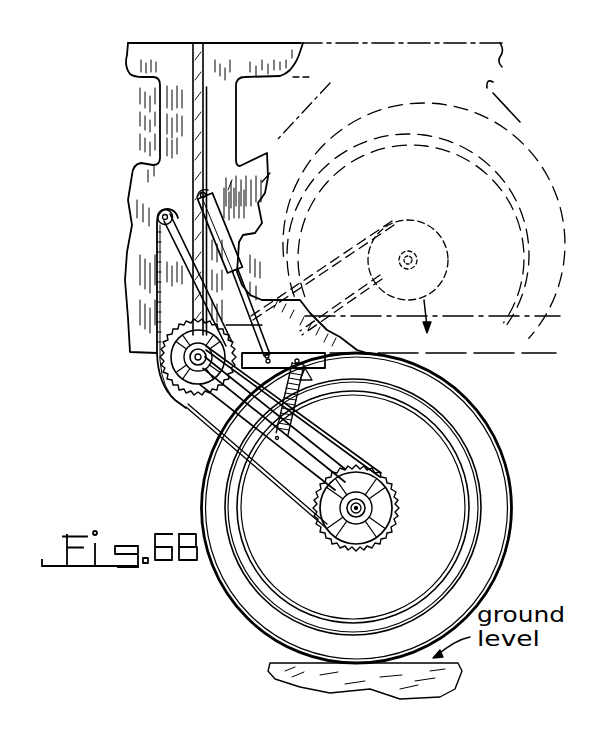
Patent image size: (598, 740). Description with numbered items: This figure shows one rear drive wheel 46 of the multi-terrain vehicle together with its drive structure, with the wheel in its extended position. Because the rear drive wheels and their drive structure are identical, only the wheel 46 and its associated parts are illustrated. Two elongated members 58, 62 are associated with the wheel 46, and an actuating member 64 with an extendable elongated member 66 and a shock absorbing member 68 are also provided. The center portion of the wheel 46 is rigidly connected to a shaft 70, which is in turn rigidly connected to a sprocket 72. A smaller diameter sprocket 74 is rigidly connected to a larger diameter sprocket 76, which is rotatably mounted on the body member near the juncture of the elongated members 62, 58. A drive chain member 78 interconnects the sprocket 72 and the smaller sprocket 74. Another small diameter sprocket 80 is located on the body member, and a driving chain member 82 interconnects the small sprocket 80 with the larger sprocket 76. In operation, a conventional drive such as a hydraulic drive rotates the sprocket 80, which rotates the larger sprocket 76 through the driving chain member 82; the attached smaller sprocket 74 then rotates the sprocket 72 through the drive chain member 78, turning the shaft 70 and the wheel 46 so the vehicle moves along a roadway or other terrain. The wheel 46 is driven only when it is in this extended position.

The rear drive wheel 46 is at (511, 548).
The elongated member 58 is at (248, 428).
The elongated member 62 is at (290, 352).
The actuating member 64 is at (217, 232).
The extendable elongated member 66 is at (237, 303).
The shock absorbing member 68 is at (302, 410).
The shaft 70 is at (361, 506).
The sprocket 72 is at (343, 540).
The smaller diameter sprocket 74 is at (195, 356).
The larger diameter sprocket 76 is at (170, 372).
The drive chain member 78 is at (340, 452).
The small diameter sprocket 80 is at (158, 214).
The driving chain member 82 is at (156, 270).